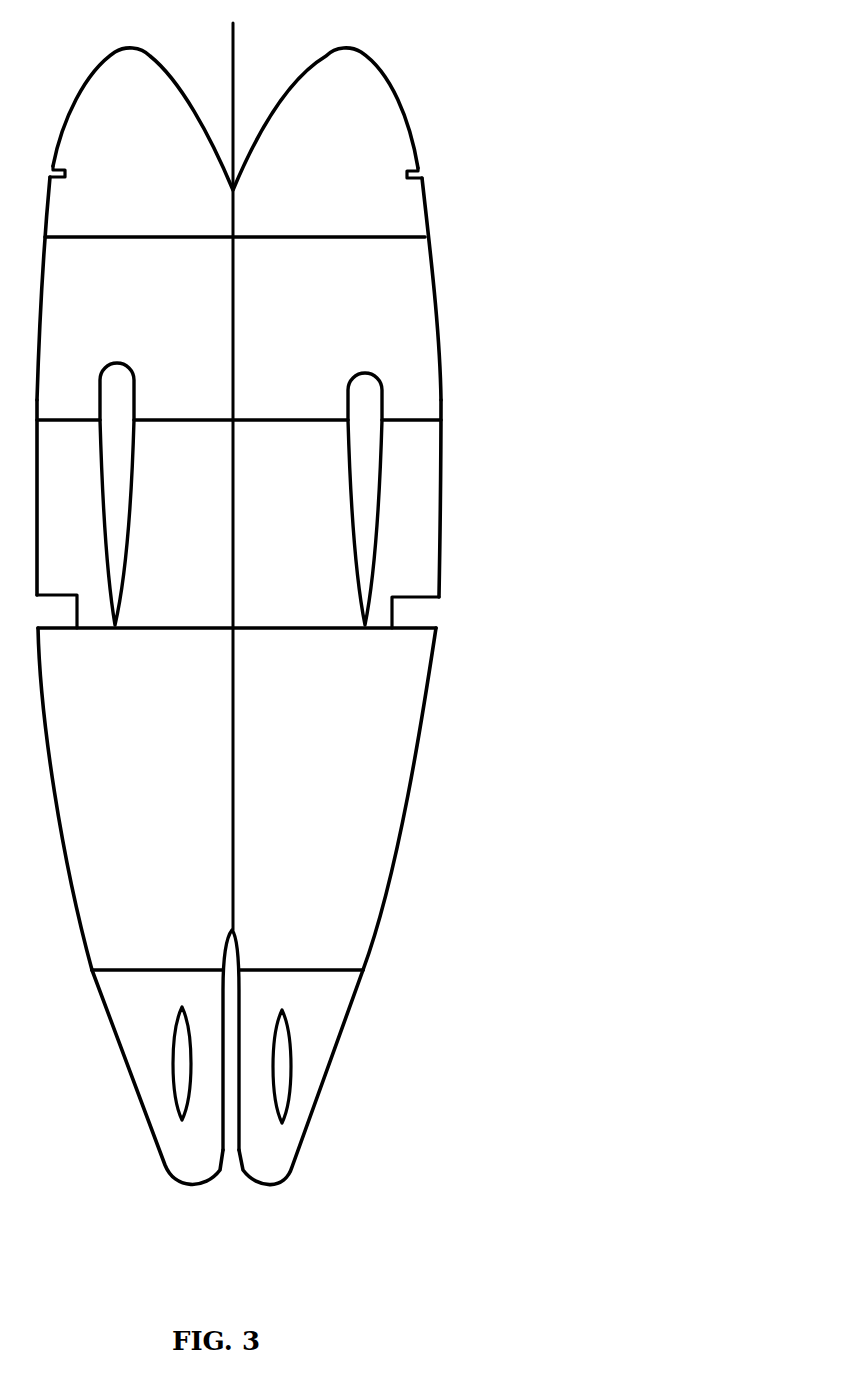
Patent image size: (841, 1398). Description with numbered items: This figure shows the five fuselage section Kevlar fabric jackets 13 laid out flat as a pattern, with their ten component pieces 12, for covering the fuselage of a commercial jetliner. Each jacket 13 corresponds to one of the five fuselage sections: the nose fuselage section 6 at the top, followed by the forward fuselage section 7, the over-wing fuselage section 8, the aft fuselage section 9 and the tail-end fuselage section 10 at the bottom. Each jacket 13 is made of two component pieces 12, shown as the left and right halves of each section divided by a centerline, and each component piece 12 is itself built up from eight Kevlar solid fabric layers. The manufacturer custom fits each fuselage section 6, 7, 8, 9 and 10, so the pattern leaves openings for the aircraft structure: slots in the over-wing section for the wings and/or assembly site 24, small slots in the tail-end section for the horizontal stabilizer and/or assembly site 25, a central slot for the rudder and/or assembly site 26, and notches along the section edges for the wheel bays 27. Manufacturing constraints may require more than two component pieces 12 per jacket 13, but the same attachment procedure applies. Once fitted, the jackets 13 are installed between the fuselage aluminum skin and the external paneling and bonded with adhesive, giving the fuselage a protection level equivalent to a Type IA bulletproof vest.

The nose fuselage section 6 is at (357, 126).
The forward fuselage section 7 is at (370, 353).
The over-wing fuselage section 8 is at (405, 562).
The aft fuselage section 9 is at (363, 818).
The tail-end fuselage section 10 is at (327, 995).
The Kevlar fabric component piece 12 is at (112, 173).
The fuselage section Kevlar fabric jacket 13 is at (242, 465).
The wings and/or assembly site 24 is at (113, 490).
The horizontal stabilizer and/or assembly site 25 is at (180, 1090).
The rudder and/or assembly site 26 is at (230, 1113).
The wheel bays 27 is at (50, 177).